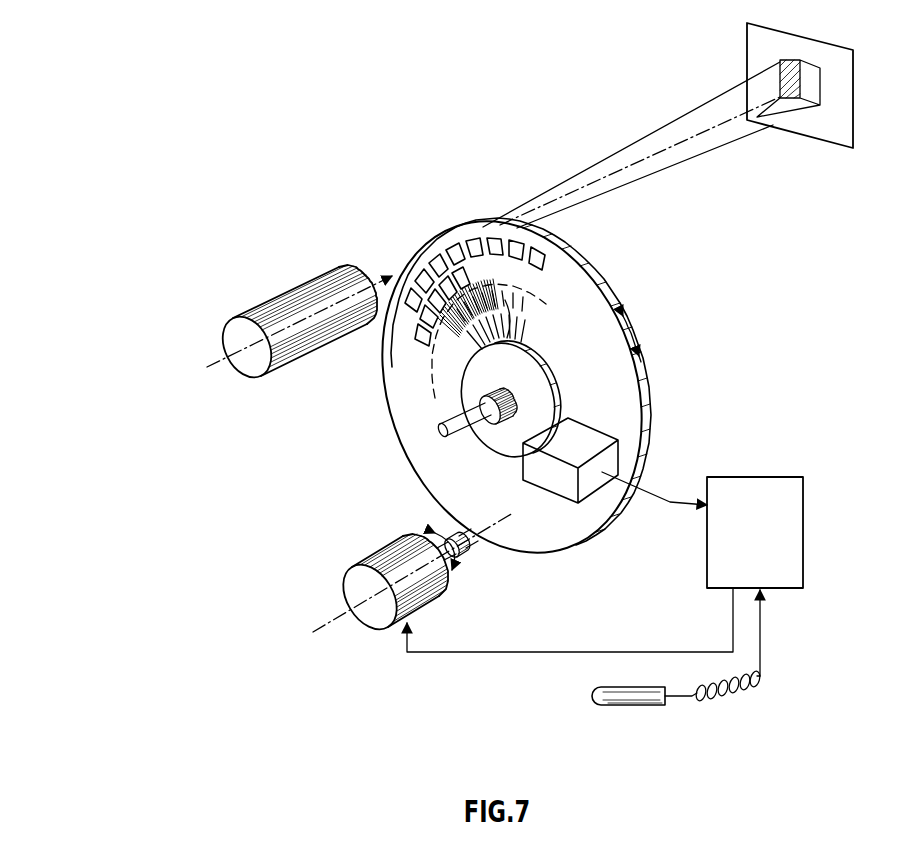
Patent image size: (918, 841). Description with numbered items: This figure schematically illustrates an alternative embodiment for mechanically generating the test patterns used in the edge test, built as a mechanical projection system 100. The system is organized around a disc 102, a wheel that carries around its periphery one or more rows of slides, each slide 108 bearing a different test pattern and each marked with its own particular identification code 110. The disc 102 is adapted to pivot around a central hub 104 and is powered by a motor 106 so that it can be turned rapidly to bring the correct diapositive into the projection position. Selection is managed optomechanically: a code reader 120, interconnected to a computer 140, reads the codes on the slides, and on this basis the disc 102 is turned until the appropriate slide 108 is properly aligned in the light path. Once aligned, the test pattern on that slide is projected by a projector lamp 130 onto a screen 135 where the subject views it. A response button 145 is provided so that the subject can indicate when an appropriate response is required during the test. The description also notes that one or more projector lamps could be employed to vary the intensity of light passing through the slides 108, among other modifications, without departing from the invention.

The mechanical projection system 100 is at (644, 385).
The disc 102 is at (420, 420).
The hub 104 is at (485, 371).
The motor 106 is at (351, 588).
The slide 108 is at (530, 312).
The identification code 110 is at (510, 320).
The code reader 120 is at (592, 438).
The projector lamp 130 is at (327, 272).
The screen 135 is at (798, 133).
The computer 140 is at (757, 478).
The response button 145 is at (623, 697).